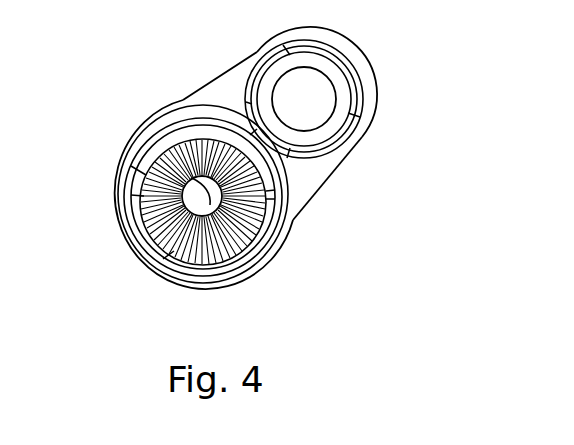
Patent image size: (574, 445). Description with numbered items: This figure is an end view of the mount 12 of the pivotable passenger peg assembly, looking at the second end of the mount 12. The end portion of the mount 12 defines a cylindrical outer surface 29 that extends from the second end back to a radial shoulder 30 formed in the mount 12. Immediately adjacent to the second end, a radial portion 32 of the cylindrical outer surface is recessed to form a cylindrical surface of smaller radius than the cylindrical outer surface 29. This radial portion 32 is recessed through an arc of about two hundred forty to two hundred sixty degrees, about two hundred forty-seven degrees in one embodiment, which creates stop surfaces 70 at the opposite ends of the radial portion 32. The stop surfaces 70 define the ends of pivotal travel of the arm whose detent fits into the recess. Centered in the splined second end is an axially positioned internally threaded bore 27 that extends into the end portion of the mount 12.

The mount 12 is at (377, 93).
The internally threaded bore 27 is at (150, 184).
The cylindrical outer surface 29 is at (257, 258).
The radial shoulder 30 is at (283, 220).
The radial portion 32 is at (142, 196).
The stop surfaces 70 is at (272, 188).